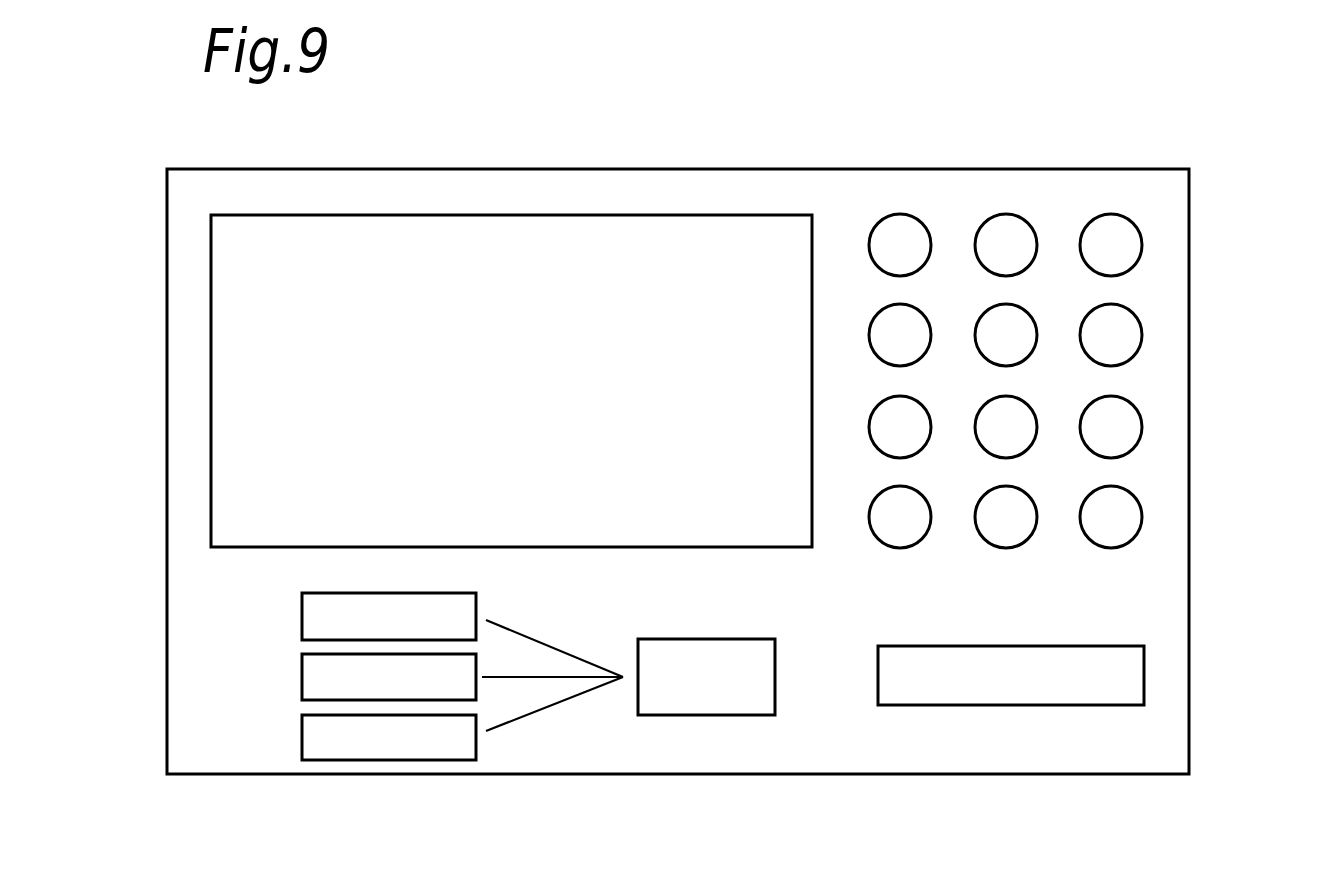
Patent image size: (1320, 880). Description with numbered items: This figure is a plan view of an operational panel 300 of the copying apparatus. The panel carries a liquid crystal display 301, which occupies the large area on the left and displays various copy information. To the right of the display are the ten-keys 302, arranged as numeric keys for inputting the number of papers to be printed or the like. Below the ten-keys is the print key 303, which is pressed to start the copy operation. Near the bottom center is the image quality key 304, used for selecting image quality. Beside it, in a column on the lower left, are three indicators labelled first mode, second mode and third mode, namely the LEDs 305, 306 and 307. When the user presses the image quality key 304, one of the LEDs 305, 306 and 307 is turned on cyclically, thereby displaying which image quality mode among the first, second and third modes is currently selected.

The operational panel 300 is at (776, 169).
The liquid crystal display 301 is at (498, 403).
The ten-keys 302 is at (1143, 282).
The print key 303 is at (1144, 677).
The image quality key 304 is at (708, 743).
The LED 305 is at (302, 615).
The LED 306 is at (302, 675).
The LED 307 is at (302, 735).